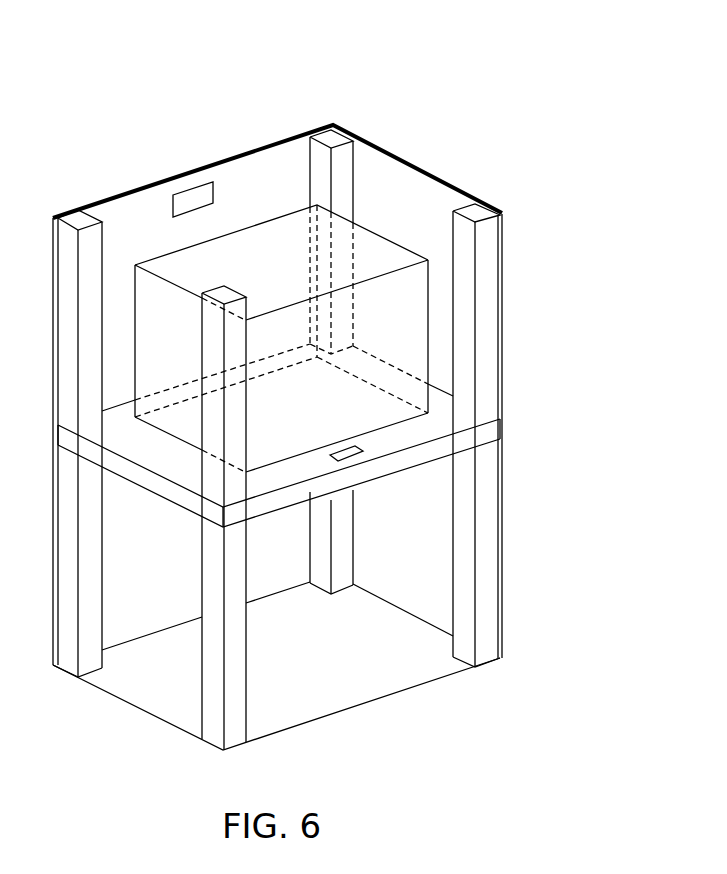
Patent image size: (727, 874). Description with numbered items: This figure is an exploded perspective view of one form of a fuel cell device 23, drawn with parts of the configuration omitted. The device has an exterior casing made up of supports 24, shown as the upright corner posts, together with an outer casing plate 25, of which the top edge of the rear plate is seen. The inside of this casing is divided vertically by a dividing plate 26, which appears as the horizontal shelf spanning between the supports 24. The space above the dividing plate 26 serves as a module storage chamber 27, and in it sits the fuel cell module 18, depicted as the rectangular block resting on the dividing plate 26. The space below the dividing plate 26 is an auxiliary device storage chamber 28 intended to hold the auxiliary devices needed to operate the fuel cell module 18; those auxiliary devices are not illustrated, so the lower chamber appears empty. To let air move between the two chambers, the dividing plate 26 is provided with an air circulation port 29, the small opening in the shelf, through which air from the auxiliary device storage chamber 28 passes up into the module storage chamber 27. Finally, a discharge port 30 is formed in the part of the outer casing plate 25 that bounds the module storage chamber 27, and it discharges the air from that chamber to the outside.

The fuel cell module 18 is at (378, 250).
The fuel cell device 23 is at (226, 78).
The supports 24 is at (78, 217).
The outer casing plate 25 is at (367, 142).
The dividing plate 26 is at (490, 430).
The module storage chamber 27 is at (387, 193).
The auxiliary device storage chamber 28 is at (137, 560).
The air circulation port 29 is at (362, 452).
The discharge port 30 is at (187, 196).